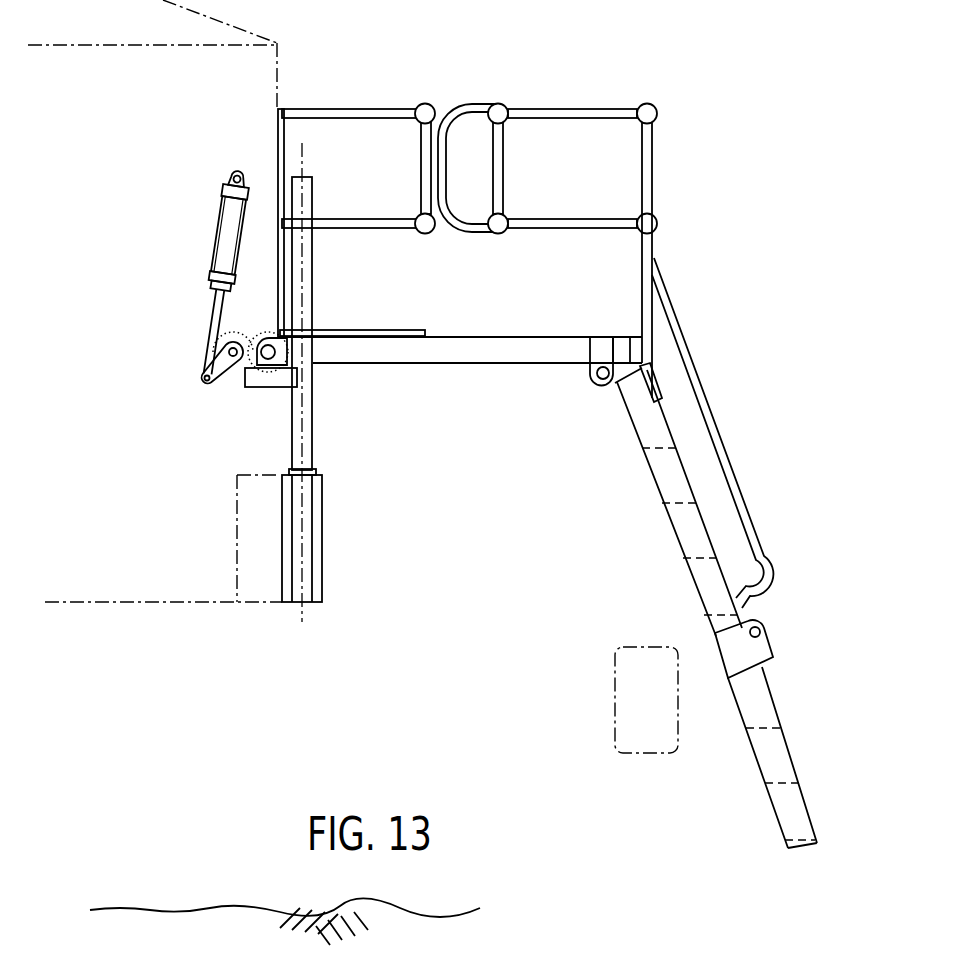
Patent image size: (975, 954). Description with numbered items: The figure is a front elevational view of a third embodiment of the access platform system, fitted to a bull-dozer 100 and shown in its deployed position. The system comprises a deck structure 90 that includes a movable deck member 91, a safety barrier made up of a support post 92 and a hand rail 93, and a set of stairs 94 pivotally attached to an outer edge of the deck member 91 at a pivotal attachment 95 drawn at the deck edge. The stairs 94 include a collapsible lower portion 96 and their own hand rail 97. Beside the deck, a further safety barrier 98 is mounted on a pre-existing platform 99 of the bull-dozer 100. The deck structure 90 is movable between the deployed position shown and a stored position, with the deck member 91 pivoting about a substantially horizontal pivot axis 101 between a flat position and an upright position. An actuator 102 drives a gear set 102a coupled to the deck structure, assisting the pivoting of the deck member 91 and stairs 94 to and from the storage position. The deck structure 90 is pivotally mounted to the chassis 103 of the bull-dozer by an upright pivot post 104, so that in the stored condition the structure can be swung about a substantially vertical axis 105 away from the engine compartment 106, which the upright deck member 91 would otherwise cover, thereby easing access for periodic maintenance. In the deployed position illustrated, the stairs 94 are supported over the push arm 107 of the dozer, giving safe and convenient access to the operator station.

The deck structure 90 is at (723, 96).
The movable deck member 91 is at (457, 350).
The support post 92 is at (648, 195).
The hand rail 93 is at (558, 112).
The set of stairs 94 is at (685, 538).
The hinge 95 is at (593, 384).
The collapsible lower portion 96 is at (770, 763).
The hand rail 97 is at (728, 477).
The further safety barrier 98 is at (377, 115).
The pre-existing platform 99 is at (353, 331).
The bull-dozer 100 is at (145, 685).
The pivot axis 101 is at (248, 547).
The actuator 102 is at (232, 222).
The gear set 102a is at (241, 362).
The chassis 103 is at (278, 372).
The upright pivot post 104 is at (310, 445).
The vertical axis 105 is at (303, 147).
The engine compartment 106 is at (103, 34).
The push arm 107 is at (671, 706).